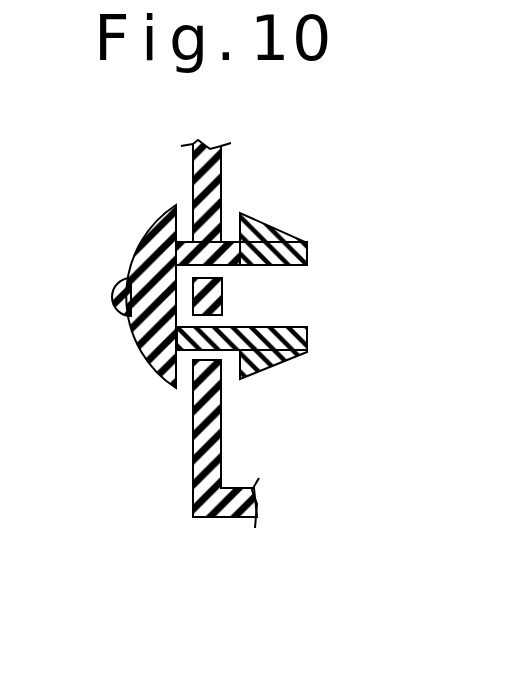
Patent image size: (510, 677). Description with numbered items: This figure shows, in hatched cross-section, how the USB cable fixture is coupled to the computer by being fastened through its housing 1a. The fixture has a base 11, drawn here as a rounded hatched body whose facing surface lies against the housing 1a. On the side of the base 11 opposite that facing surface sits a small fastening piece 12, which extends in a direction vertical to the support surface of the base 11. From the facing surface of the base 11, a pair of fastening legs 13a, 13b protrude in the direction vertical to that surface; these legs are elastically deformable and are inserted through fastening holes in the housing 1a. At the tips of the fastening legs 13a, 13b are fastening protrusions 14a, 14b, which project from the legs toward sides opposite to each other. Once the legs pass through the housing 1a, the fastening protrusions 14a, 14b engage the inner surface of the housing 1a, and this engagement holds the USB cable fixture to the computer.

The housing 1a is at (221, 173).
The base 11 is at (142, 250).
The fastening piece 12 is at (112, 287).
The fastening leg 13a is at (262, 265).
The fastening leg 13b is at (258, 327).
The fastening protrusion 14a is at (270, 227).
The fastening protrusion 14b is at (267, 363).